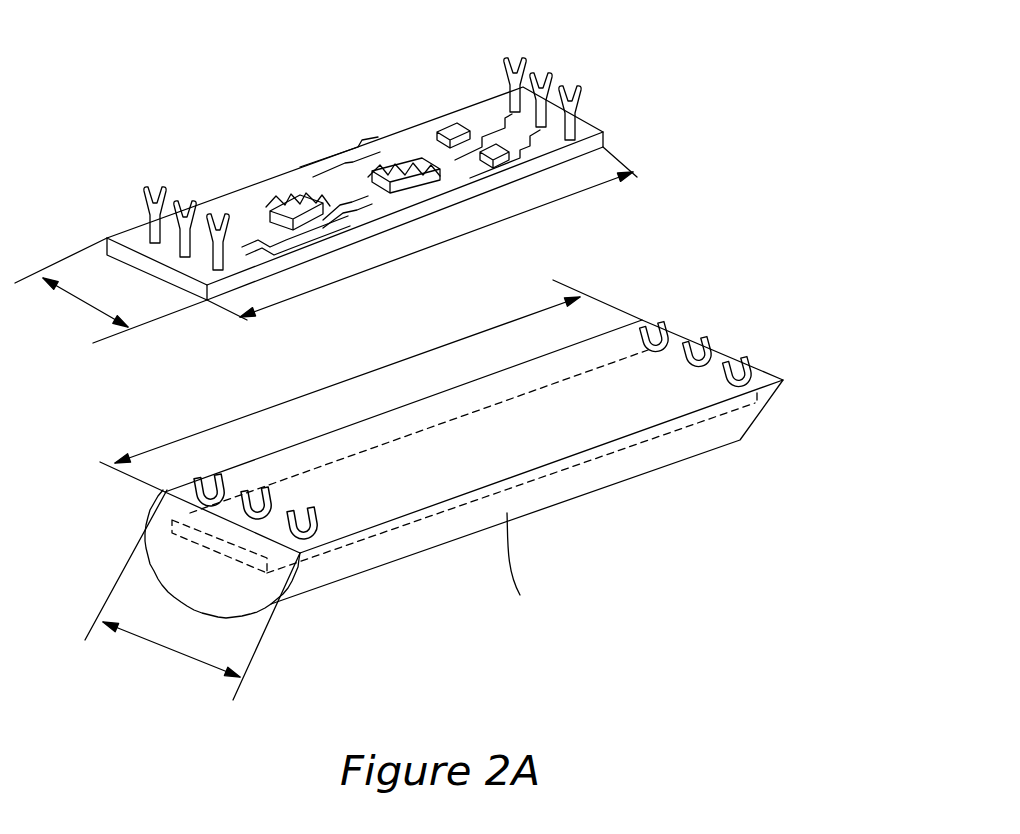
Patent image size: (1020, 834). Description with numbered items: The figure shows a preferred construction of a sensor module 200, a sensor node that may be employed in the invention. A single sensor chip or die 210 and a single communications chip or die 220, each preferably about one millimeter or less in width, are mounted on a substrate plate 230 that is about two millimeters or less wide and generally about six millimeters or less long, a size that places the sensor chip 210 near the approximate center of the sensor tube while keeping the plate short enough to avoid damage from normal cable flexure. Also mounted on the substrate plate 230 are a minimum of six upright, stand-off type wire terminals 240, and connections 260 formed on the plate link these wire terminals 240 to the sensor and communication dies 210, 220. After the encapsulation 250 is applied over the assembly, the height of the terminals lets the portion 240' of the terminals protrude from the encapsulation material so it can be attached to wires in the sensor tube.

The sensor module 200 is at (640, 96).
The sensor chip 210 is at (302, 193).
The communications chip 220 is at (410, 162).
The substrate plate 230 is at (122, 230).
The wire terminals 240 is at (362, 214).
The portion of the terminals 240' is at (474, 432).
The encapsulation 250 is at (755, 425).
The connections 260 is at (347, 165).